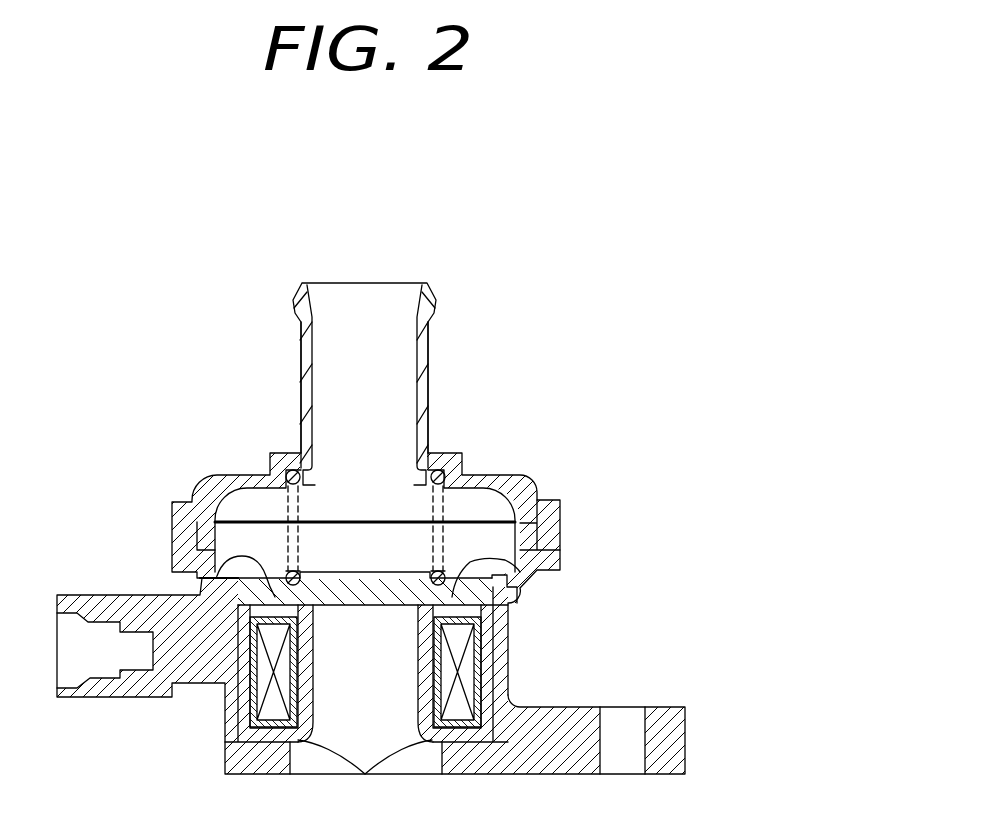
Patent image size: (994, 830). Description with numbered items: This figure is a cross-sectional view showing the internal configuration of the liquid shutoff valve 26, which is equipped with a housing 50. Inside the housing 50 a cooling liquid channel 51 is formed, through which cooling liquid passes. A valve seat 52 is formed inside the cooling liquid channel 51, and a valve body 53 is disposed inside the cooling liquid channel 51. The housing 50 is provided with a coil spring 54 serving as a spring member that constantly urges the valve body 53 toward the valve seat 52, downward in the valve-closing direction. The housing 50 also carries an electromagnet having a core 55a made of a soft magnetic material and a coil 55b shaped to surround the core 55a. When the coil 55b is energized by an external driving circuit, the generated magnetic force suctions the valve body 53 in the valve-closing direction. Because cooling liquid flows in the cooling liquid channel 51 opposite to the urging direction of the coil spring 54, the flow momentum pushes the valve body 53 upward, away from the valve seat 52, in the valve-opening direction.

The liquid shutoff valve 26 is at (527, 283).
The housing 50 is at (205, 478).
The cooling liquid channel 51 is at (407, 394).
The valve seat 52 is at (217, 580).
The valve body 53 is at (366, 607).
The coil spring 54 is at (425, 502).
The core 55a is at (365, 776).
The coil 55b is at (485, 672).